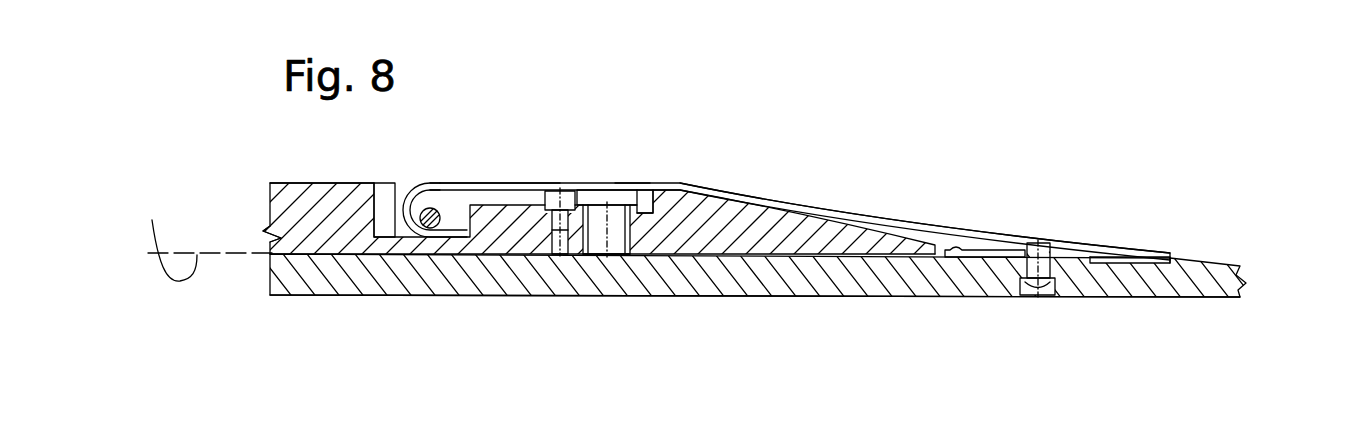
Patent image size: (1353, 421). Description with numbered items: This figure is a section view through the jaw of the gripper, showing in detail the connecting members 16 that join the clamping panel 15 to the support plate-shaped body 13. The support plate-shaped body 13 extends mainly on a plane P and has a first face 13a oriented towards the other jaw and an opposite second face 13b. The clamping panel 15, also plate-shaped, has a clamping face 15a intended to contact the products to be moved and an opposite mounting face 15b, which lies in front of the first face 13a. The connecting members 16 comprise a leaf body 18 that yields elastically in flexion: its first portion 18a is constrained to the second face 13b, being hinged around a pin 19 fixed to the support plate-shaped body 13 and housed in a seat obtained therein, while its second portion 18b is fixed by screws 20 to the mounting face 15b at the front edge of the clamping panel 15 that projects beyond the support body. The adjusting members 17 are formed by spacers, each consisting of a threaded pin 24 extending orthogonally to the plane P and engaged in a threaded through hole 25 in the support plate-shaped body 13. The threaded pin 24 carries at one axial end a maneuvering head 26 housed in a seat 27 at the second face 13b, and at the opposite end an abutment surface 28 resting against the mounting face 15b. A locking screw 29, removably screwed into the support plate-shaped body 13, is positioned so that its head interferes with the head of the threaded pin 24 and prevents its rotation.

The support plate-shaped body 13 is at (277, 192).
The first face 13a is at (306, 257).
The second face 13b is at (356, 183).
The clamping panel 15 is at (1216, 280).
The clamping face 15a is at (1158, 297).
The mounting face 15b is at (272, 240).
The connecting members 16 is at (826, 196).
The adjusting members 17 is at (630, 186).
The leaf body 18 is at (748, 188).
The first portion 18a is at (497, 183).
The second portion 18b is at (1127, 250).
The pin 19 is at (437, 208).
The screws 20 is at (1045, 292).
The threaded pin 24 is at (620, 242).
The threaded through hole 25 is at (626, 252).
The maneuvering head 26 is at (596, 197).
The seat 27 is at (640, 192).
The abutment surface 28 is at (598, 255).
The locking screw 29 is at (546, 222).
The plane P is at (211, 235).